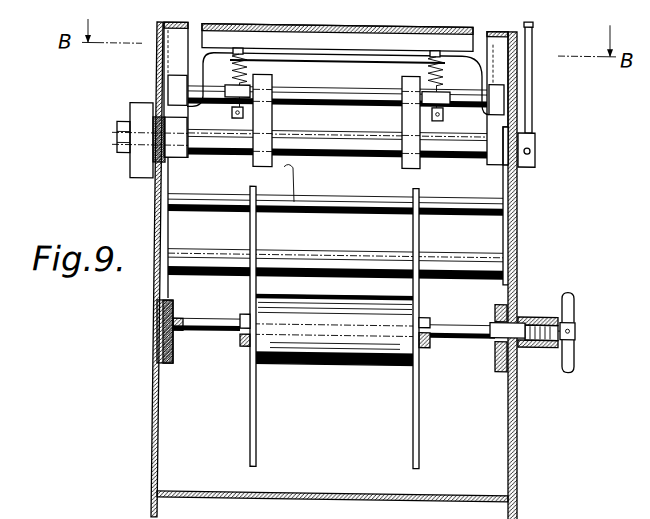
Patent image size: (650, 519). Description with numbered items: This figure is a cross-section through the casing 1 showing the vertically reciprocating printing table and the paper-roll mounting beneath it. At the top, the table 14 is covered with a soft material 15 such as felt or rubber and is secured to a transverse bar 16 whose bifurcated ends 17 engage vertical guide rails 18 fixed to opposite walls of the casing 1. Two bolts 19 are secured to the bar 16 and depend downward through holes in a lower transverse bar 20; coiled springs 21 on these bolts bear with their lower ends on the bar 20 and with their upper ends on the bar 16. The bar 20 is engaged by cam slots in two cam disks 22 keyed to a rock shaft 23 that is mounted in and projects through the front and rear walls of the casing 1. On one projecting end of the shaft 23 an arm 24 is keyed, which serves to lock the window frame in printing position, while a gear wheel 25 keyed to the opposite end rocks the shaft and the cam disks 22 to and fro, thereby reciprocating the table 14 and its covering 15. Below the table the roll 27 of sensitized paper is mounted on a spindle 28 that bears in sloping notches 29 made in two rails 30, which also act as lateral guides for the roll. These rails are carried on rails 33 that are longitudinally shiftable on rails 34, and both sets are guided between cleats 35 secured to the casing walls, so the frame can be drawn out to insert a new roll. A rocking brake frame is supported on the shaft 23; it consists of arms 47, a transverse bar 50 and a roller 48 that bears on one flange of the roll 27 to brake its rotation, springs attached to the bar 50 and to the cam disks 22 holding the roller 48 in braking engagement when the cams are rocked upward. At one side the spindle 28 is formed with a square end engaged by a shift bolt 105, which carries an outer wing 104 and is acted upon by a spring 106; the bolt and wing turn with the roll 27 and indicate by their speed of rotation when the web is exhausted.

The casing 1 is at (518, 231).
The table 14 is at (385, 41).
The soft material 15 is at (360, 25).
The transverse bar 16 is at (318, 59).
The bifurcated ends 17 is at (172, 86).
The vertical guide rails 18 is at (336, 93).
The bolts 19 is at (232, 112).
The transverse bar 20 is at (356, 104).
The coiled springs 21 is at (244, 62).
The cam disks 22 is at (258, 159).
The rock shaft 23 is at (340, 152).
The arm 24 is at (531, 51).
The gear wheel 25 is at (136, 165).
The roll 27 is at (298, 360).
The spindle 28 is at (220, 309).
The sloping notches 29 is at (245, 312).
The rails 30 is at (245, 345).
The rails 33 is at (172, 320).
The rails 34 is at (173, 345).
The cleats 35 is at (173, 302).
The arms 47 is at (169, 235).
The roller 48 is at (338, 236).
The transverse bar 50 is at (393, 191).
The wing 104 is at (572, 297).
The shift bolt 105 is at (518, 334).
The spring 106 is at (547, 315).